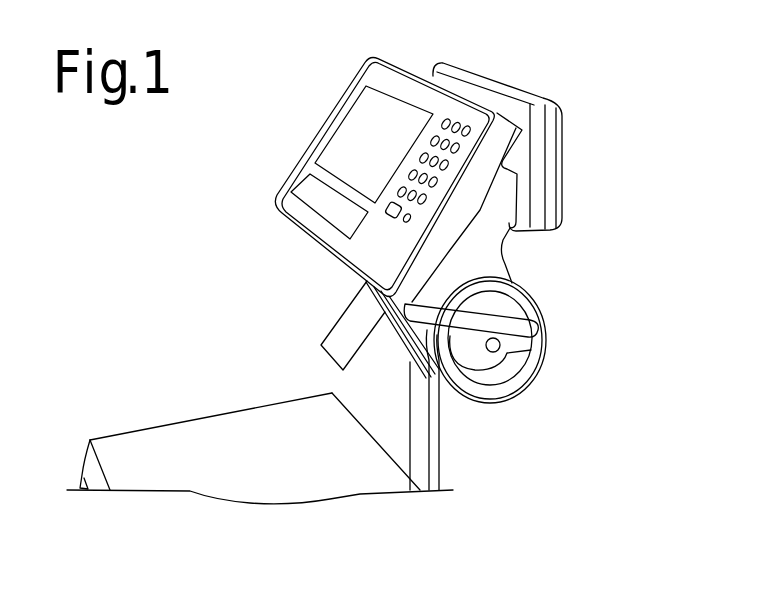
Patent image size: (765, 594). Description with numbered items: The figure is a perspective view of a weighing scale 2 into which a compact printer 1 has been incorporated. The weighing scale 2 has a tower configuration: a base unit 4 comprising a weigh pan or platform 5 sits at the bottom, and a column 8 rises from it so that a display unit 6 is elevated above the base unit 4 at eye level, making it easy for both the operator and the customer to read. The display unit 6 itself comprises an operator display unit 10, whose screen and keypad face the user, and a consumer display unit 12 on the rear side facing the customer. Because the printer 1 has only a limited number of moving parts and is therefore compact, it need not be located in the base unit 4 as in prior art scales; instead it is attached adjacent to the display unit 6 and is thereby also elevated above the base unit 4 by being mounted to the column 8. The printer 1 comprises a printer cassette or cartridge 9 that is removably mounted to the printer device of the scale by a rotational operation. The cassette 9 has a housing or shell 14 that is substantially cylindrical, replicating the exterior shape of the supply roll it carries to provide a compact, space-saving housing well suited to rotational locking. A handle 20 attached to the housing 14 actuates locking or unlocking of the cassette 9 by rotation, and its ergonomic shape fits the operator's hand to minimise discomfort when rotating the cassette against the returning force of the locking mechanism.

The printer 1 is at (560, 294).
The weighing scale 2 is at (527, 115).
The base unit 4 is at (200, 418).
The weigh pan or platform 5 is at (260, 437).
The display unit 6 is at (347, 176).
The column 8 is at (440, 449).
The printer cassette or cartridge 9 is at (519, 386).
The operator display unit 10 is at (308, 172).
The consumer display unit 12 is at (556, 99).
The printer cassette housing or shell 14 is at (387, 356).
The handle 20 is at (544, 341).